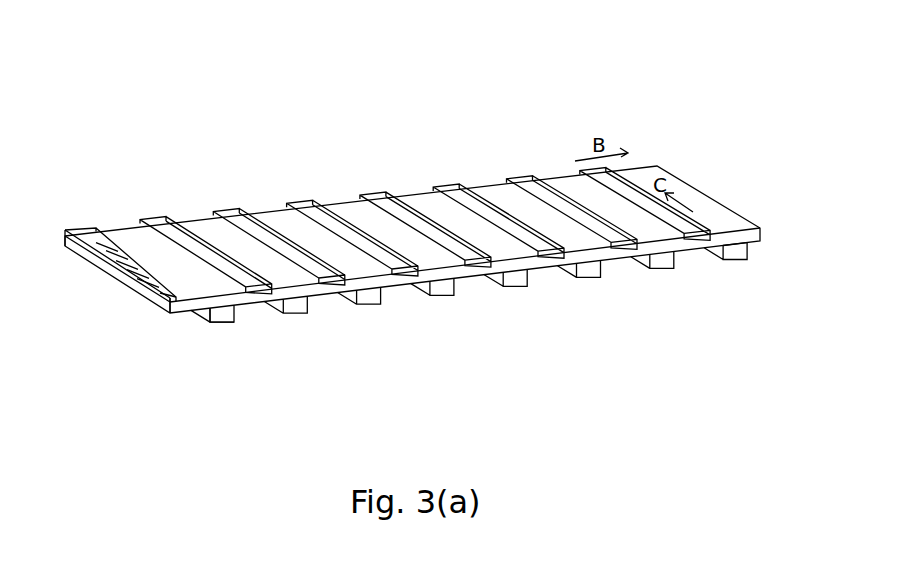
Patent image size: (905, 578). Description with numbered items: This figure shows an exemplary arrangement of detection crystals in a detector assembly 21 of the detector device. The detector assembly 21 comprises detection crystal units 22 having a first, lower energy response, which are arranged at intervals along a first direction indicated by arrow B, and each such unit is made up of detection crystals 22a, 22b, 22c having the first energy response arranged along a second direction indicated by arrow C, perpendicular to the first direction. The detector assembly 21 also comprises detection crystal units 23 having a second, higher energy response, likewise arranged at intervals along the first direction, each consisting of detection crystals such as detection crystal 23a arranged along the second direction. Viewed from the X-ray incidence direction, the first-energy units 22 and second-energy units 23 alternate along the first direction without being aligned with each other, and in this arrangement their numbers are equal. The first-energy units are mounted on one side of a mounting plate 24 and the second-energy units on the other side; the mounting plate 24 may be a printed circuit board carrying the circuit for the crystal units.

The detector assembly 21 is at (770, 88).
The detection crystal unit having a first energy response 22 is at (233, 216).
The detection crystal having a first energy response 22a is at (171, 305).
The detection crystal having a first energy response 22b is at (163, 293).
The detection crystal having a first energy response 22c is at (160, 283).
The detection crystal unit having a second energy response 23 is at (363, 305).
The detection crystal having a second energy response 23a is at (208, 324).
The mounting plate 24 is at (740, 243).